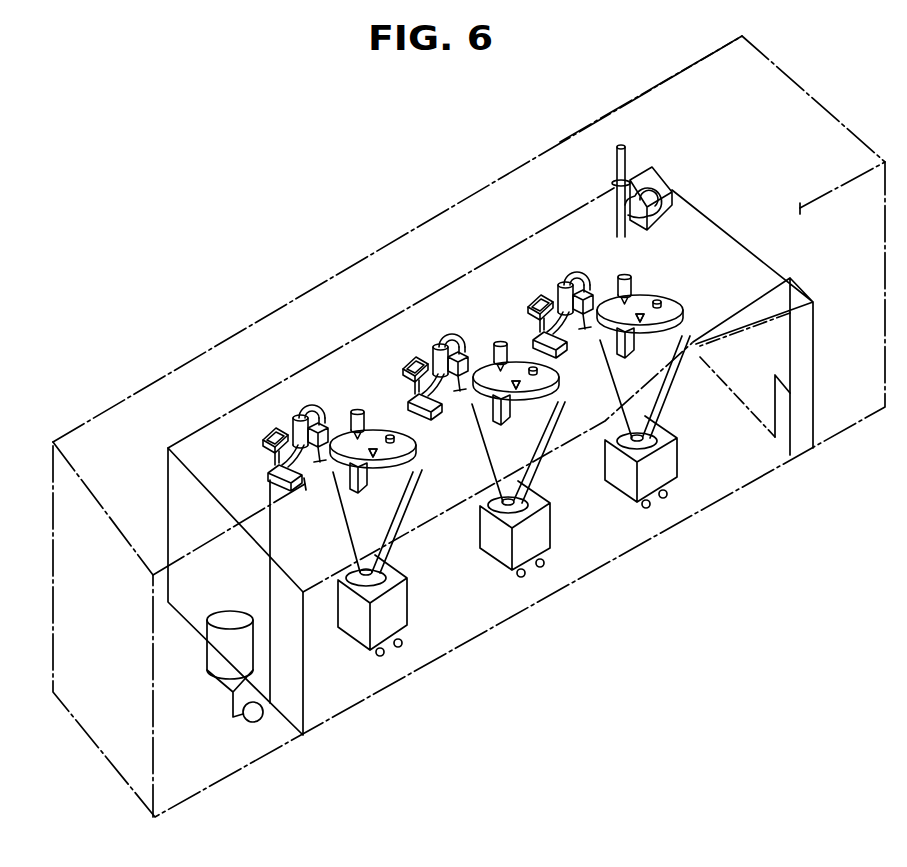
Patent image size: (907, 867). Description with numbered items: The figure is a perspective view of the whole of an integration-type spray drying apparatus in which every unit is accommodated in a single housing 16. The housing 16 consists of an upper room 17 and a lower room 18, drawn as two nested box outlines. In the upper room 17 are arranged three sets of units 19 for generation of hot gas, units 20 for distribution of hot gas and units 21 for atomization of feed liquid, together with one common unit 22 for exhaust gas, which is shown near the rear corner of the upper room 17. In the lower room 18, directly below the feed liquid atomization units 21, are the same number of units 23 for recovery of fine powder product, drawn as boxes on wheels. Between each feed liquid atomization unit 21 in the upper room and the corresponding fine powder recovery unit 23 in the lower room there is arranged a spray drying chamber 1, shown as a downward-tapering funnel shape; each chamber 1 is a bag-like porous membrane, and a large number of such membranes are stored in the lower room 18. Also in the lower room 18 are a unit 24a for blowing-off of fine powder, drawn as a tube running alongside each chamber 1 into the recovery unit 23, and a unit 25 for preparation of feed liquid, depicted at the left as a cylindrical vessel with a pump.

The spray drying chamber 1 is at (349, 523).
The housing 16 is at (855, 136).
The upper room 17 is at (607, 112).
The lower room 18 is at (543, 231).
The unit for generation of hot gas 19 is at (297, 410).
The unit for distribution of hot gas 20 is at (348, 427).
The unit for atomization of feed liquid 21 is at (373, 450).
The unit for exhaust gas 22 is at (662, 174).
The unit for recovery of fine powder product 23 is at (408, 625).
The unit for blowing-off of fine powder 24a is at (393, 543).
The unit for preparation of feed liquid 25 is at (207, 659).